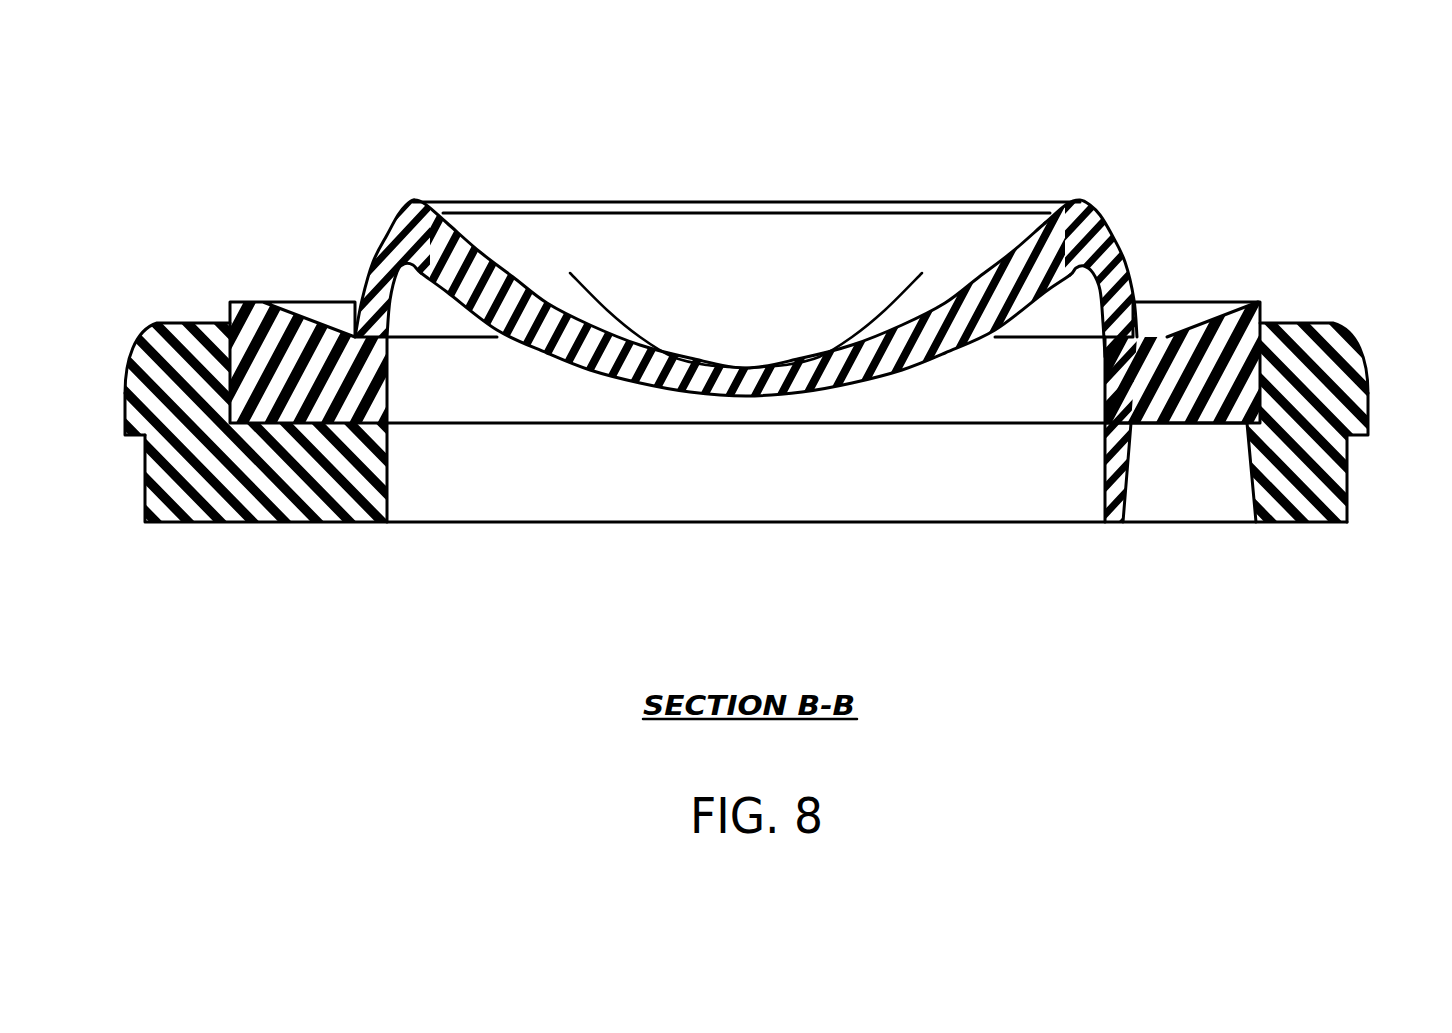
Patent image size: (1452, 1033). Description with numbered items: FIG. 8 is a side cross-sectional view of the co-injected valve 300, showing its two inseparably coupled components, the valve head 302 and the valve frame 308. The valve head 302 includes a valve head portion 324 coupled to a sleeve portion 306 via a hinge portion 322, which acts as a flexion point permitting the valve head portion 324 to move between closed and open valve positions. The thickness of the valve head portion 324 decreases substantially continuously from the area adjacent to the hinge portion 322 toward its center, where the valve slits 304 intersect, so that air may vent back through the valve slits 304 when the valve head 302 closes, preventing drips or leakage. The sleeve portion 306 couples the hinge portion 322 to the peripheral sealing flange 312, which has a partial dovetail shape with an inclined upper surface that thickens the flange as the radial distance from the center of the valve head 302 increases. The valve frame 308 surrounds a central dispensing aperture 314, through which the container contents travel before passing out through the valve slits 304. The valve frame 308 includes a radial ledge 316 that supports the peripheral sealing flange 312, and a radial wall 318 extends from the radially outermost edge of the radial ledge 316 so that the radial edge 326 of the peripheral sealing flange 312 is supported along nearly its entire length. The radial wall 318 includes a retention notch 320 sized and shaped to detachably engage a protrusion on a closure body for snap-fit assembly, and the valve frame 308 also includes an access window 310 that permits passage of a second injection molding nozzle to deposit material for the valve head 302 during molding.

The co-injected valve 300 is at (751, 354).
The valve head 302 is at (724, 360).
The valve slits 304 is at (618, 313).
The sleeve portion 306 is at (368, 261).
The valve frame 308 is at (751, 449).
The access window 310 is at (1178, 523).
The peripheral sealing flange 312 is at (1204, 314).
The central dispensing aperture 314 is at (627, 468).
The radial ledge 316 is at (235, 523).
The radial wall 318 is at (144, 346).
The retention notch 320 is at (134, 436).
The hinge portion 322 is at (1082, 196).
The valve head portion 324 is at (503, 277).
The radial edge 326 is at (228, 317).